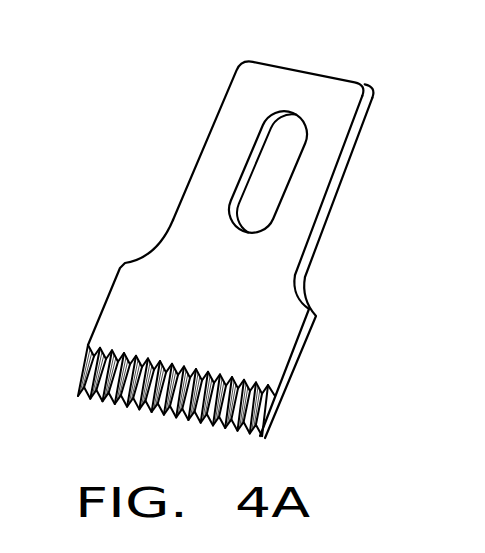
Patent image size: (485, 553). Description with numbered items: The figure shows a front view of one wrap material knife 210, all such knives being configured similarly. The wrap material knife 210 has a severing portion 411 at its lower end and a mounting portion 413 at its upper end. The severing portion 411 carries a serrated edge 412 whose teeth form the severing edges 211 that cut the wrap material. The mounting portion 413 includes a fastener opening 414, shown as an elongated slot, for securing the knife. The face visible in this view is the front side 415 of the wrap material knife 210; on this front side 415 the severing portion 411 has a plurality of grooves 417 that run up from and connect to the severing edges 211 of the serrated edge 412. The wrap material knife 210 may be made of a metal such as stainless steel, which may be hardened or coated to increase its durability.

The wrap material knife 210 is at (148, 180).
The severing edges 211 is at (80, 404).
The severing portion 411 is at (117, 290).
The serrated edge 412 is at (264, 440).
The mounting portion 413 is at (330, 170).
The fastener opening 414 is at (257, 140).
The front side 415 is at (236, 302).
The grooves 417 is at (142, 362).